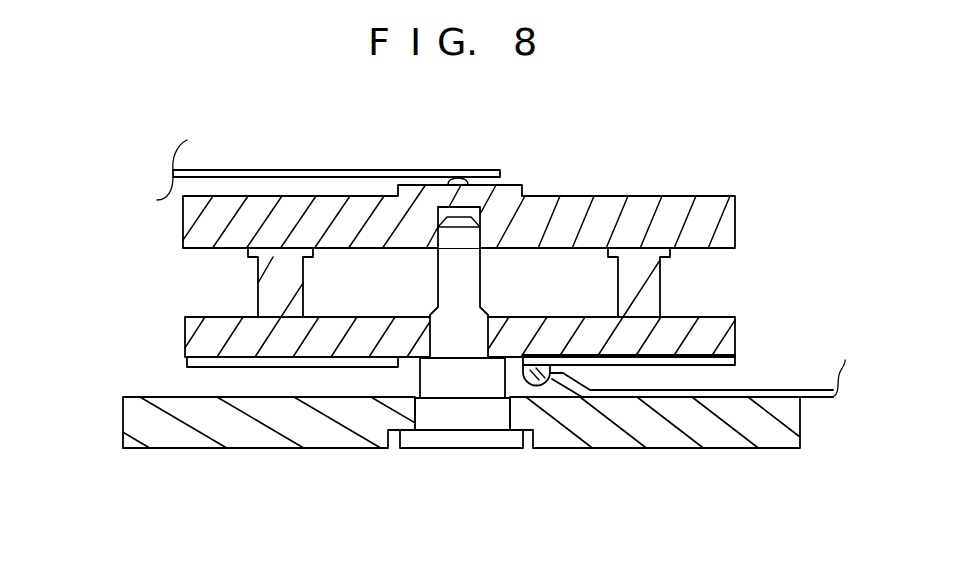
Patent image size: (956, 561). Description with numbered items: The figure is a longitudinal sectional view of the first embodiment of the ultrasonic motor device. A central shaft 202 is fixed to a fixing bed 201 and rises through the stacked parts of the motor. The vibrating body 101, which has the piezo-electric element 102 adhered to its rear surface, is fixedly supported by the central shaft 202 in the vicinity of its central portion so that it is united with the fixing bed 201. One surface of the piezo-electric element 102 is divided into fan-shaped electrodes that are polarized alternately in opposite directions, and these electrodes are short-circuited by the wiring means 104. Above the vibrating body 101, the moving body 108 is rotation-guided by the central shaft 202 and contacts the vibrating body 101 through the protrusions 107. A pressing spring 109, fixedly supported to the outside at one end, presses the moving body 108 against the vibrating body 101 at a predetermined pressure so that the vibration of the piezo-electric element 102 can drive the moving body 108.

The vibrating body 101 is at (198, 325).
The piezo-electric element 102 is at (187, 357).
The wiring means 104 is at (777, 388).
The protrusions 107 is at (648, 283).
The moving body 108 is at (635, 205).
The pressing spring 109 is at (300, 170).
The fixing bed 201 is at (690, 432).
The central shaft 202 is at (443, 415).